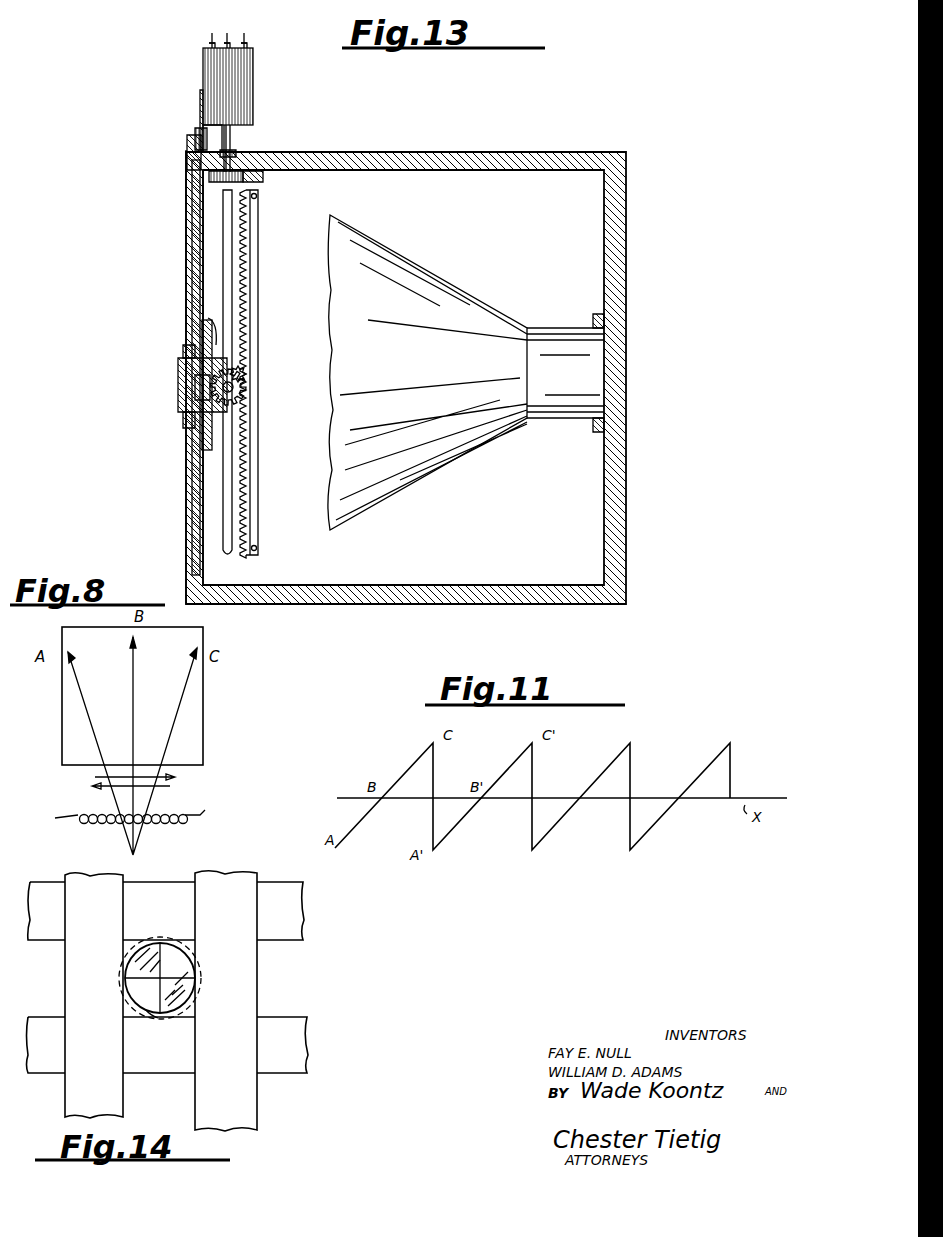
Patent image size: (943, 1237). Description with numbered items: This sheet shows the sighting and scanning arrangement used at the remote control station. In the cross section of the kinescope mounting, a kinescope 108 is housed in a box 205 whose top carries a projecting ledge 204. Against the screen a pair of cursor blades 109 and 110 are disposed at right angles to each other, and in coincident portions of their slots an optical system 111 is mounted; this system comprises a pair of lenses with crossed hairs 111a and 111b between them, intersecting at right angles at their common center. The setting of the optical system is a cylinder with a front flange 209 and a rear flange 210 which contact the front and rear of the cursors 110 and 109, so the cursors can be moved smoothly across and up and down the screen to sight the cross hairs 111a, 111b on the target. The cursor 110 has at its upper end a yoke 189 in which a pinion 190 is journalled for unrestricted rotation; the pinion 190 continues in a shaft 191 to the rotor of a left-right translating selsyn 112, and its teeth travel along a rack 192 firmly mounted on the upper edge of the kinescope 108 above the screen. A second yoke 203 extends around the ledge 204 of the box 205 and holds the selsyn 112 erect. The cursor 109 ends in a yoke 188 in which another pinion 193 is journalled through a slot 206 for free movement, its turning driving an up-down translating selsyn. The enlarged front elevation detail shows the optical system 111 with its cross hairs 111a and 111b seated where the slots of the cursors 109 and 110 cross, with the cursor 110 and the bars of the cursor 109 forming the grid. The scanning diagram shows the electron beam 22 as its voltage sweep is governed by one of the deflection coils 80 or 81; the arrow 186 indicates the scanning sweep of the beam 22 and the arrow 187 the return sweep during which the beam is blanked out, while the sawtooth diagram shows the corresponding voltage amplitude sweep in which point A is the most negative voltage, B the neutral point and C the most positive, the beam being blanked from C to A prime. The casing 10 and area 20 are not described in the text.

In FIG. 13, the casing 10 is at (190, 223).
In FIG. 8, the target area 20 is at (203, 725).
In FIG. 8, the electron beam 22 is at (84, 694).
In FIG. 8, the deflection coil 80 is at (169, 808).
In FIG. 8, the deflection coil 81 is at (205, 812).
In FIG. 13, the kinescope 108 is at (452, 468).
In FIG. 13, the cursor blade 109 is at (204, 332).
In FIG. 14, the cursor blade 109 is at (55, 938).
In FIG. 13, the cursor blade 110 is at (196, 207).
In FIG. 14, the cursor blade 110 is at (245, 882).
In FIG. 13, the optical system 111 is at (182, 382).
In FIG. 14, the optical system 111 is at (190, 1010).
In FIG. 14, the cross hair 111a is at (145, 1020).
In FIG. 14, the cross hair 111b is at (190, 982).
In FIG. 13, the left-right translating selsyn 112 is at (253, 102).
In FIG. 8, the scanning sweep arrow 186 is at (95, 777).
In FIG. 8, the return sweep arrow 187 is at (168, 786).
In FIG. 13, the yoke 188 is at (234, 412).
In FIG. 13, the yoke 189 is at (238, 156).
In FIG. 13, the pinion 190 is at (250, 182).
In FIG. 13, the shaft 191 is at (232, 150).
In FIG. 13, the rack 192 is at (265, 182).
In FIG. 13, the pinion 193 is at (240, 374).
In FIG. 13, the second yoke 203 is at (200, 140).
In FIG. 13, the projecting ledge 204 is at (192, 155).
In FIG. 13, the box 205 is at (466, 152).
In FIG. 13, the slot 206 is at (226, 280).
In FIG. 13, the front flange 209 is at (185, 416).
In FIG. 13, the rear flange 210 is at (210, 325).